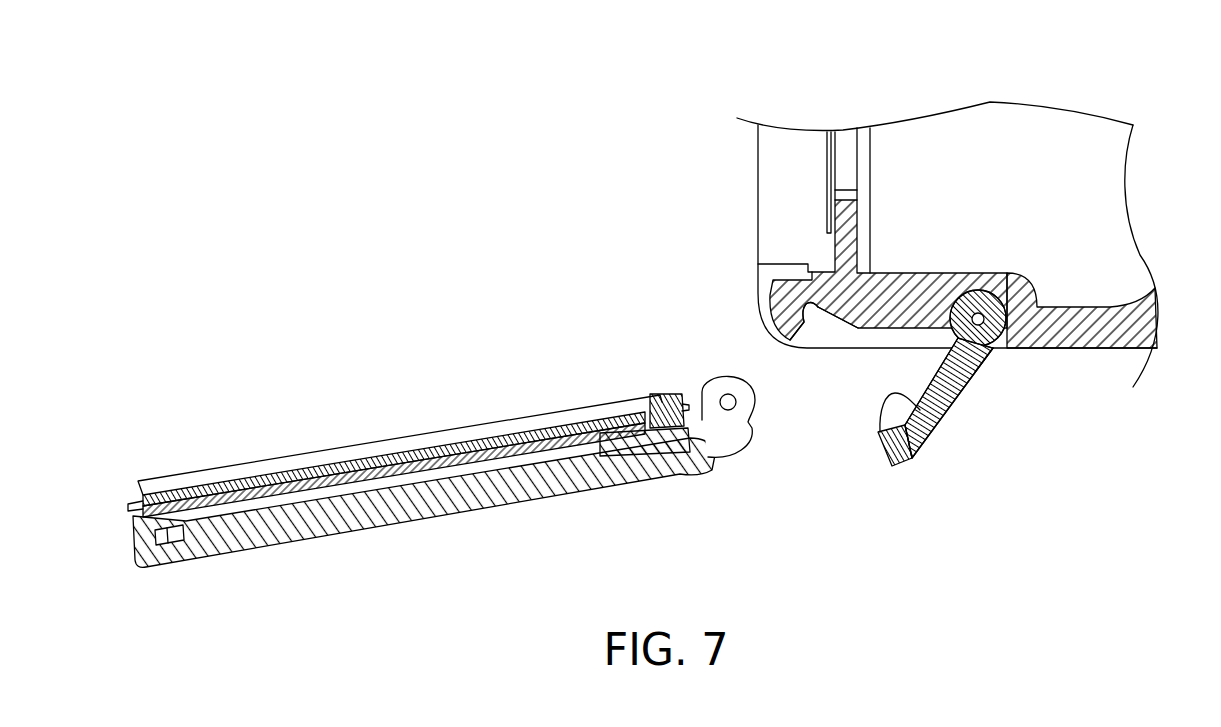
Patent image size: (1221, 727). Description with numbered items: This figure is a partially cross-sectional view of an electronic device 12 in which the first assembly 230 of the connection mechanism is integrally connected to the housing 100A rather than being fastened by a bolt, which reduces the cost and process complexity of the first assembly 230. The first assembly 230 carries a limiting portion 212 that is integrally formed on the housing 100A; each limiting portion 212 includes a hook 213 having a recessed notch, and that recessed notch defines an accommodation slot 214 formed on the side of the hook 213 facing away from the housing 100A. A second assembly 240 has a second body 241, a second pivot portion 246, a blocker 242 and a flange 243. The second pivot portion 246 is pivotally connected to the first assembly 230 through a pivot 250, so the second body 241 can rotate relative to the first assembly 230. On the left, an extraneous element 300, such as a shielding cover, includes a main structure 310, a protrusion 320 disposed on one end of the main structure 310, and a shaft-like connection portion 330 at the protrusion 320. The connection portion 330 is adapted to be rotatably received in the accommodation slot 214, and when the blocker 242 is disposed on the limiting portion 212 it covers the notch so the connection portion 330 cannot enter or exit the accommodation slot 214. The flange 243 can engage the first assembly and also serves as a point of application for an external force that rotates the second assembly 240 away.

The electronic device 12 is at (973, 316).
The housing 100A is at (1073, 320).
The first assembly 230 is at (897, 296).
The pivot 250 is at (984, 291).
The second assembly 240 is at (960, 457).
The second body 241 is at (945, 397).
The blocker 242 is at (887, 466).
The flange 243 is at (902, 408).
The second pivot portion 246 is at (1021, 440).
The limiting portion 212 is at (804, 415).
The hook 213 is at (795, 333).
The accommodation slot 214 is at (823, 318).
The extraneous element 300 is at (441, 404).
The main structure 310 is at (498, 440).
The protrusion 320 is at (714, 386).
The connection portion 330 is at (728, 394).